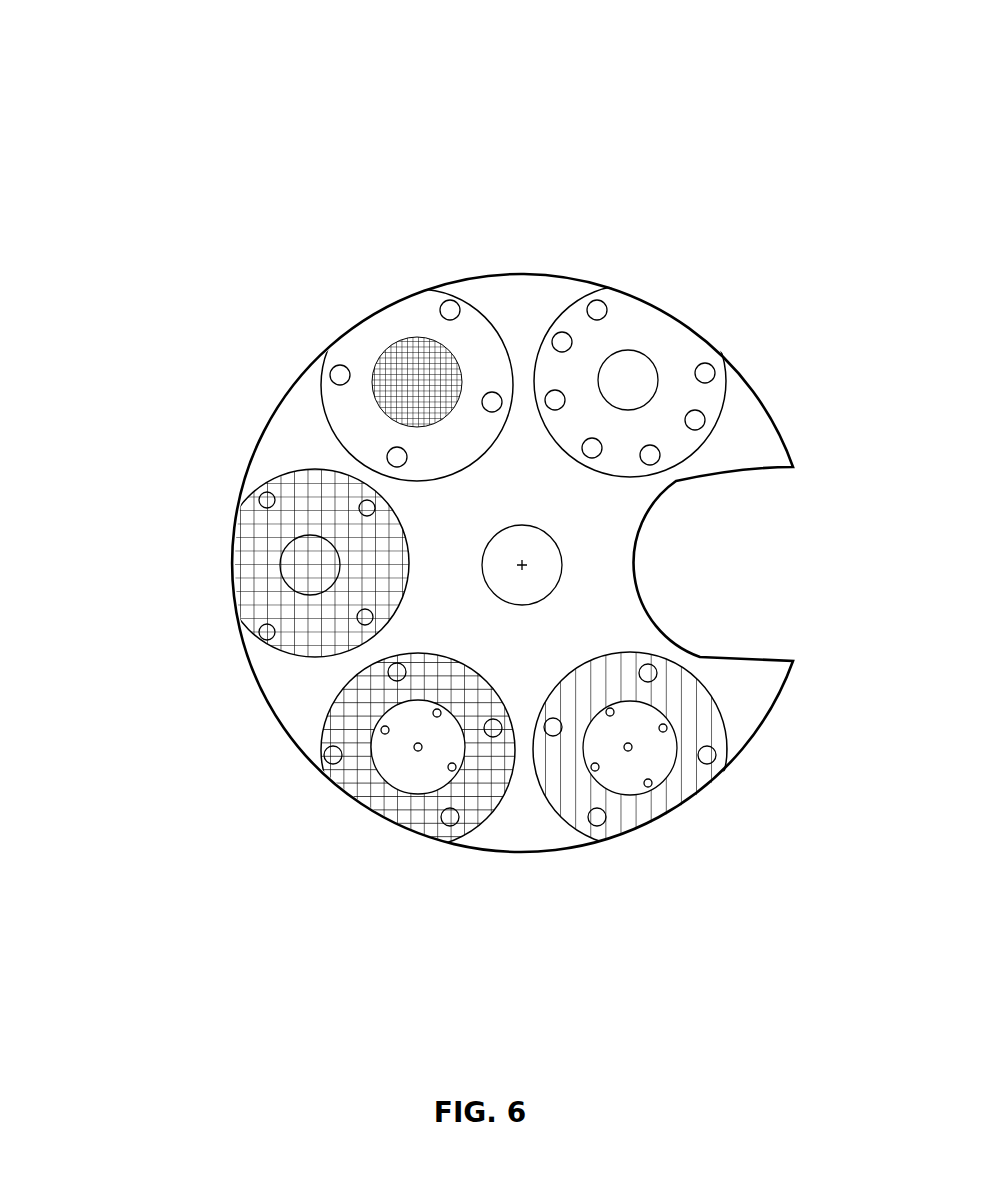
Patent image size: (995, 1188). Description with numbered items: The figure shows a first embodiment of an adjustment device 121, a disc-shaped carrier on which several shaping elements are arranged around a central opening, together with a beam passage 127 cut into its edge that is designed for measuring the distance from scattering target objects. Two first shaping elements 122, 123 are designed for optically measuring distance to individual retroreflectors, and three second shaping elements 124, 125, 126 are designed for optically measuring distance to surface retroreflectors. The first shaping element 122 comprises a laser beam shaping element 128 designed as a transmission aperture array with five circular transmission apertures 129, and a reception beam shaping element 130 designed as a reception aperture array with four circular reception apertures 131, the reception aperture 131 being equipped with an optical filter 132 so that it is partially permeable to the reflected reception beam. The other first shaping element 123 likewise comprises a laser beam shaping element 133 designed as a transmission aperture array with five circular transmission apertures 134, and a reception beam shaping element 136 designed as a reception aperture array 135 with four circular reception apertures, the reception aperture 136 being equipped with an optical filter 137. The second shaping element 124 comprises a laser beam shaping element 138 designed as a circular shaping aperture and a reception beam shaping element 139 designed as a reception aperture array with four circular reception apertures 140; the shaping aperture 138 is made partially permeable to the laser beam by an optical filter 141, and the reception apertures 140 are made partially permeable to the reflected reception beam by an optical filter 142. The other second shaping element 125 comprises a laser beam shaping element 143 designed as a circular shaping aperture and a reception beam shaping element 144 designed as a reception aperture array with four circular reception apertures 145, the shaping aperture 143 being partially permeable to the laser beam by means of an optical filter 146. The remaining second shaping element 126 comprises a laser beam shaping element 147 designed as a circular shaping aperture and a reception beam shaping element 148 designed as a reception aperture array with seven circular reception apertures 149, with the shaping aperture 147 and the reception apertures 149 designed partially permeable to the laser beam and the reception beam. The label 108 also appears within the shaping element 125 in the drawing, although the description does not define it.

The adjustment device 121 is at (508, 98).
The first shaping element 122 is at (712, 912).
The first shaping element 123 is at (344, 912).
The second shaping element 124 is at (140, 557).
The second shaping element 125 is at (368, 232).
The second shaping element 126 is at (668, 232).
The beam passage 127 is at (772, 558).
The filter medium 108 is at (347, 417).
The laser beam shaping element 128 is at (634, 792).
The transmission apertures 129 is at (610, 706).
The reception beam shaping element 130 is at (689, 688).
The reception apertures 131 is at (705, 770).
The optical filter 132 is at (718, 733).
The laser beam shaping element 133 is at (416, 792).
The transmission apertures 134 is at (398, 776).
The reception aperture array 135 is at (443, 670).
The reception beam shaping element 136 is at (336, 770).
The optical filter 137 is at (342, 746).
The laser beam shaping element 138 is at (356, 567).
The reception beam shaping element 139 is at (311, 634).
The reception apertures 140 is at (235, 503).
The optical filter 141 is at (238, 567).
The optical filter 142 is at (376, 539).
The laser beam shaping element 143 is at (416, 362).
The reception beam shaping element 144 is at (476, 442).
The reception apertures 145 is at (450, 300).
The optical filter 146 is at (433, 415).
The laser beam shaping element 147 is at (651, 370).
The reception beam shaping element 148 is at (681, 446).
The reception apertures 149 is at (597, 305).